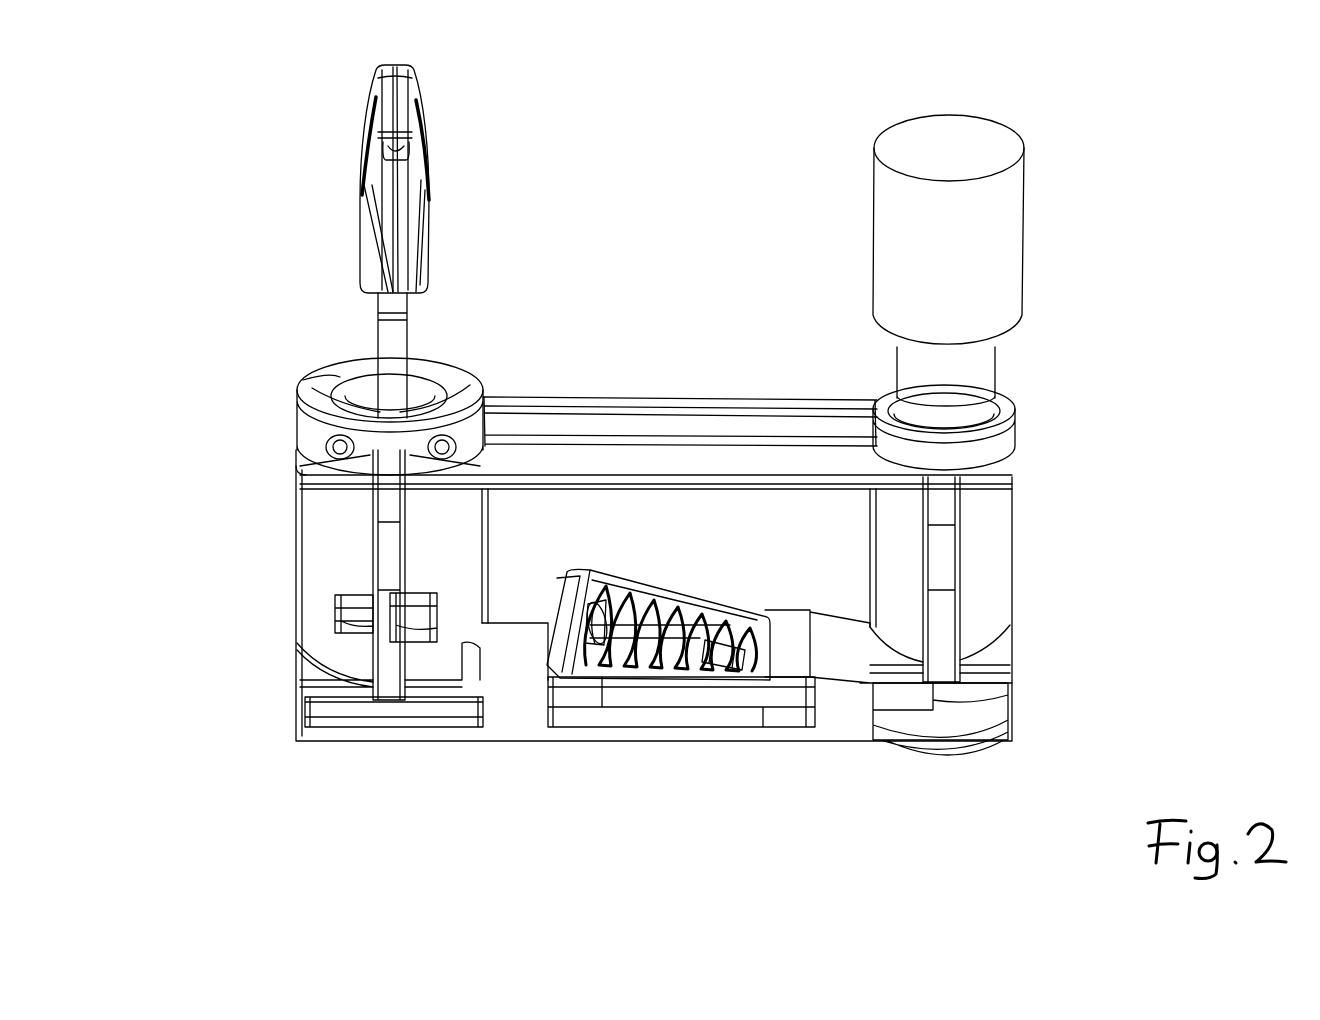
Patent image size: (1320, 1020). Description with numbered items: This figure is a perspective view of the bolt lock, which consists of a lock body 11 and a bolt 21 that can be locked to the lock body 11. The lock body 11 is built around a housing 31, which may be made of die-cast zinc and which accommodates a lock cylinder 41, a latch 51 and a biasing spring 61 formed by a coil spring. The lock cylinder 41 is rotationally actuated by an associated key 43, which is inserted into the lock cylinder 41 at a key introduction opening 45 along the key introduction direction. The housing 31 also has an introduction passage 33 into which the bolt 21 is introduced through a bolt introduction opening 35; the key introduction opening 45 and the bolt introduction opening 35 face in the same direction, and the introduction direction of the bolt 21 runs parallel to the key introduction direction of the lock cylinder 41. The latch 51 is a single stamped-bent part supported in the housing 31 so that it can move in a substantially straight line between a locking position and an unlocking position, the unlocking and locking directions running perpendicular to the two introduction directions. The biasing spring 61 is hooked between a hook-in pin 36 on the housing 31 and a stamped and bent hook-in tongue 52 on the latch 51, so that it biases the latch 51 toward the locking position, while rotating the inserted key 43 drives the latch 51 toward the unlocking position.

The lock body 11 is at (222, 578).
The bolt 21 is at (1065, 275).
The housing 31 is at (652, 400).
The introduction passage 33 is at (882, 380).
The bolt introduction opening 35 is at (1010, 390).
The hook-in pin 36 is at (612, 600).
The lock cylinder 41 is at (372, 400).
The key 43 is at (383, 225).
The key introduction opening 45 is at (430, 385).
The latch 51 is at (663, 700).
The hook-in tongue 52 is at (712, 668).
The biasing spring 61 is at (658, 610).